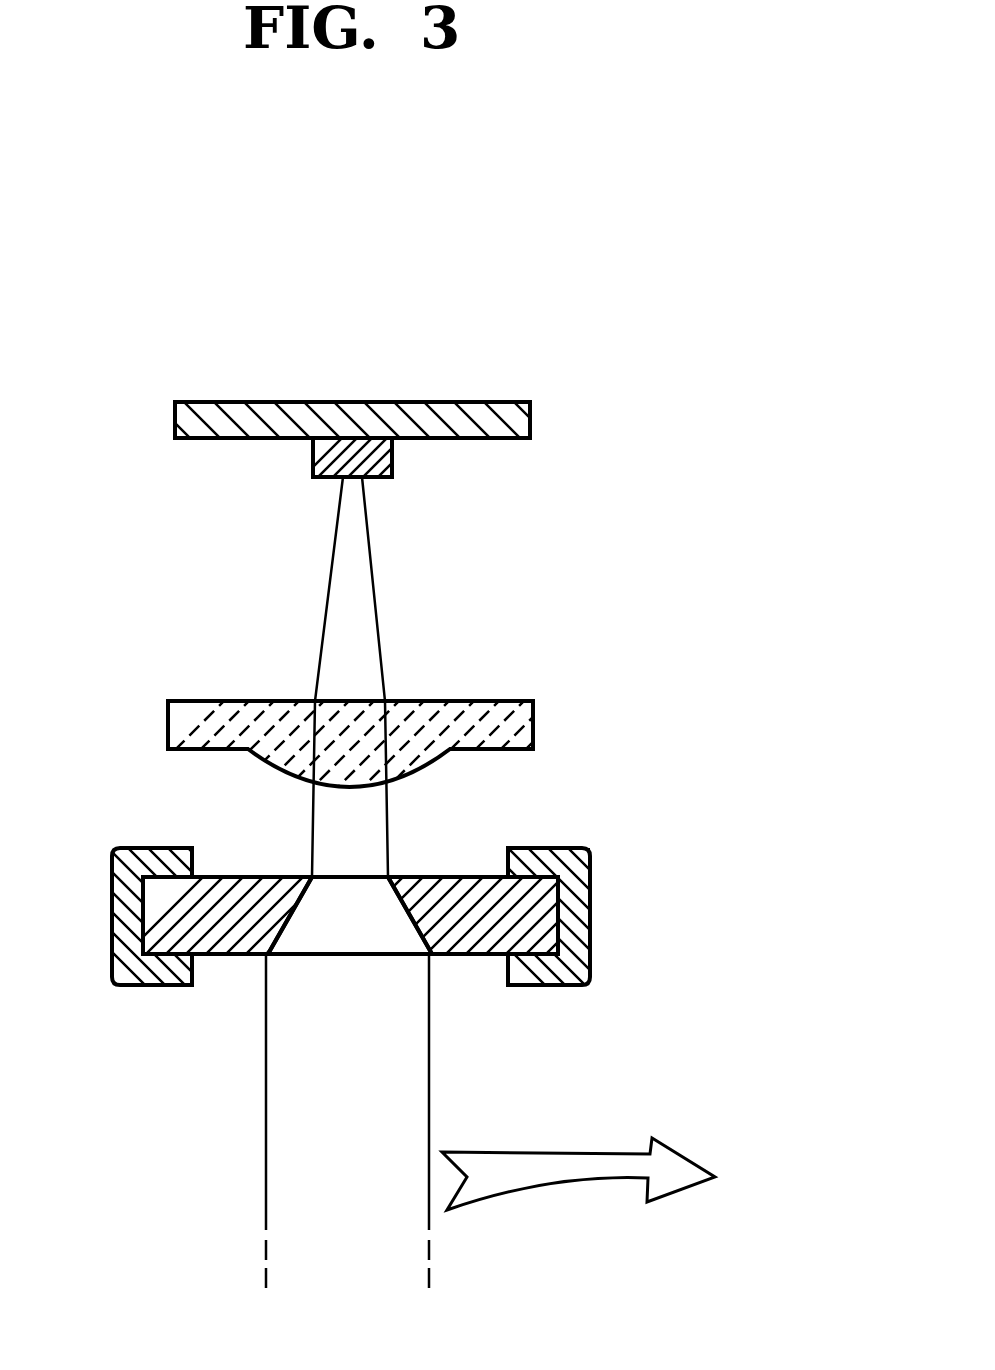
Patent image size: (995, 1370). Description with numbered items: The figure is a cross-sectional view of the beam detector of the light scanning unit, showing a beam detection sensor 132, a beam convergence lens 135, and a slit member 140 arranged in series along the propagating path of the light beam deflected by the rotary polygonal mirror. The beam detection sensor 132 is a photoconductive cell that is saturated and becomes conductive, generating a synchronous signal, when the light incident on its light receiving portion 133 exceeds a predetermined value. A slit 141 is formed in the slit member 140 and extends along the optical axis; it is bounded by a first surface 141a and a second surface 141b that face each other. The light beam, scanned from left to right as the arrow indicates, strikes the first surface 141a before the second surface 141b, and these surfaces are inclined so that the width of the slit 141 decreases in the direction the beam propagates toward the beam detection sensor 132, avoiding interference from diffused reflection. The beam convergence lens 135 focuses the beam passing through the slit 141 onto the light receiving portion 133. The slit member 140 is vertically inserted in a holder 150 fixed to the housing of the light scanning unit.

The beam detection sensor 132 is at (503, 403).
The light receiving portion 133 is at (310, 460).
The beam convergence lens 135 is at (533, 702).
The slit member 140 is at (218, 945).
The slit 141 is at (353, 888).
The first surface of the slit 141a is at (281, 935).
The second surface of the slit 141b is at (413, 937).
The holder 150 is at (592, 900).